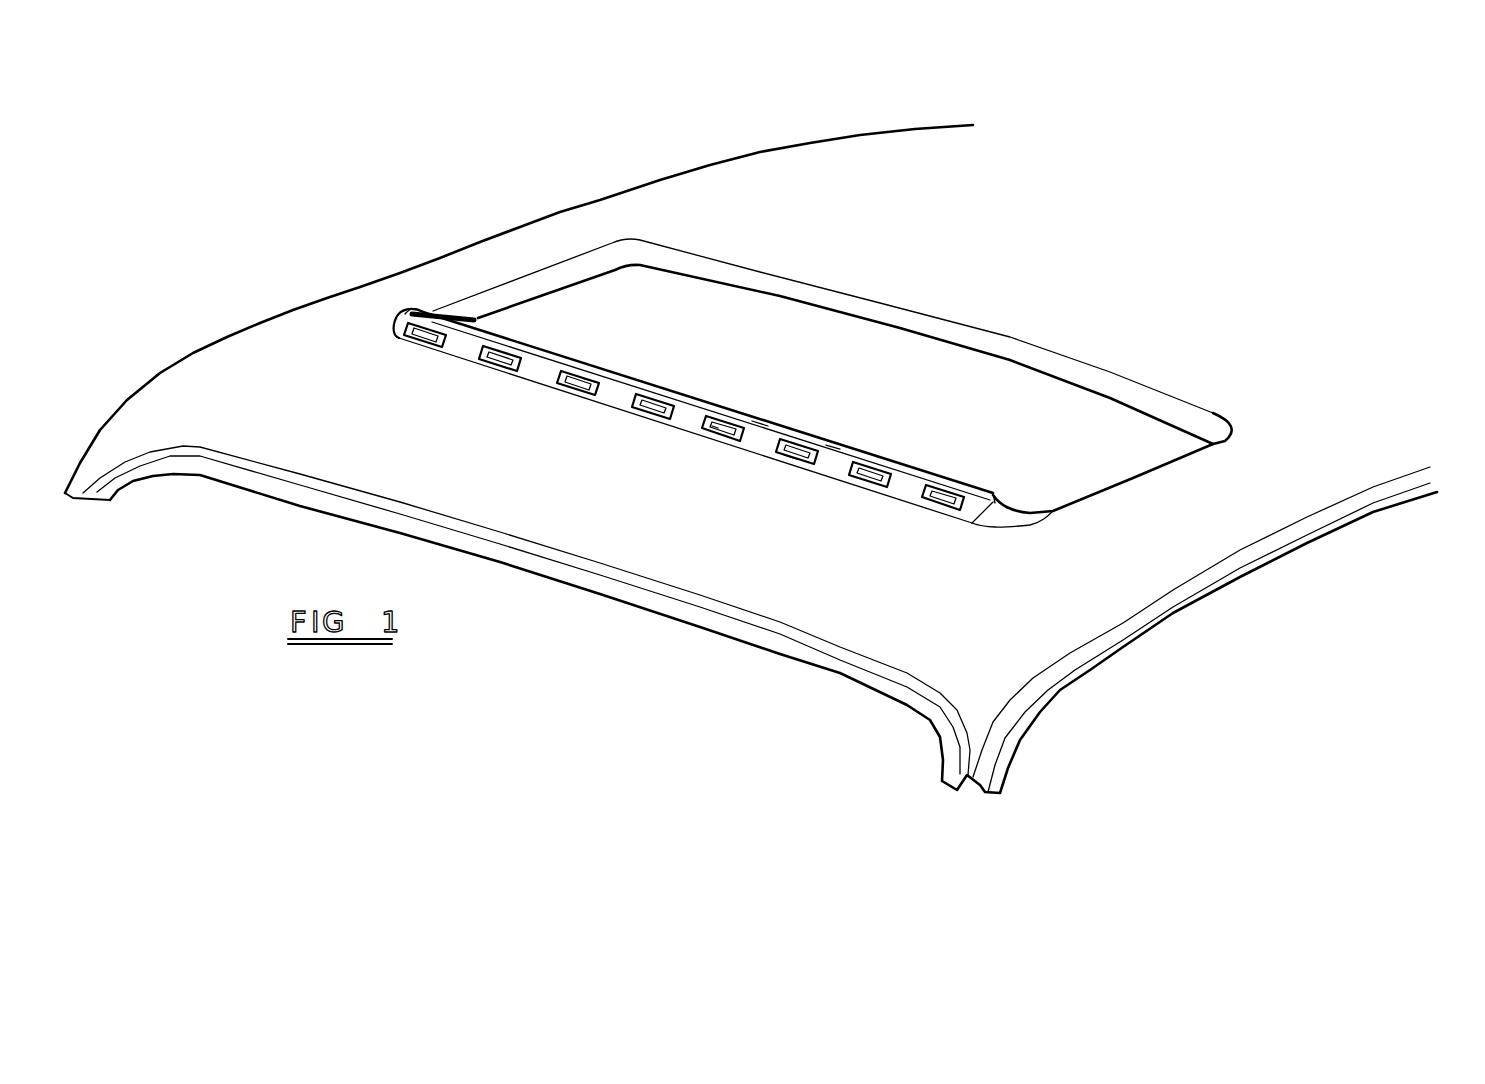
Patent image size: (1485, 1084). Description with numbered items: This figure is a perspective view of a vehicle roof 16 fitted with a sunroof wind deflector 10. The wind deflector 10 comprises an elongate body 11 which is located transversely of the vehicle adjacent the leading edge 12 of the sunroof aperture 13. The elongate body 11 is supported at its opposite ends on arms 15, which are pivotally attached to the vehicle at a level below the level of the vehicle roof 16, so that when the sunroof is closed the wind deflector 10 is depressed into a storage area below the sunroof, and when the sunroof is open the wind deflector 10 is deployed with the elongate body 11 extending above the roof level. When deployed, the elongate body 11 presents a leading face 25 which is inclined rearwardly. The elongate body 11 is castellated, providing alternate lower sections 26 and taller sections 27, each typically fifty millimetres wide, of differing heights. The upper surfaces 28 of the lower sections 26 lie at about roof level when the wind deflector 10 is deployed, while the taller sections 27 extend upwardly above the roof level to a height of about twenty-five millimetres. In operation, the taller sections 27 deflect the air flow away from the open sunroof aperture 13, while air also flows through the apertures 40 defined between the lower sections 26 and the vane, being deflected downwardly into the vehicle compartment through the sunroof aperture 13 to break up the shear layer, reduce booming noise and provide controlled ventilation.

The wind deflector 10 is at (740, 375).
The elongate body 11 is at (688, 408).
The leading edge 12 is at (890, 492).
The sunroof aperture 13 is at (1055, 417).
The arms 15 is at (456, 312).
The vehicle roof 16 is at (748, 178).
The leading face 25 is at (608, 392).
The lower sections 26 is at (790, 457).
The taller sections 27 is at (828, 460).
The upper surfaces 28 is at (583, 378).
The apertures 40 is at (515, 343).